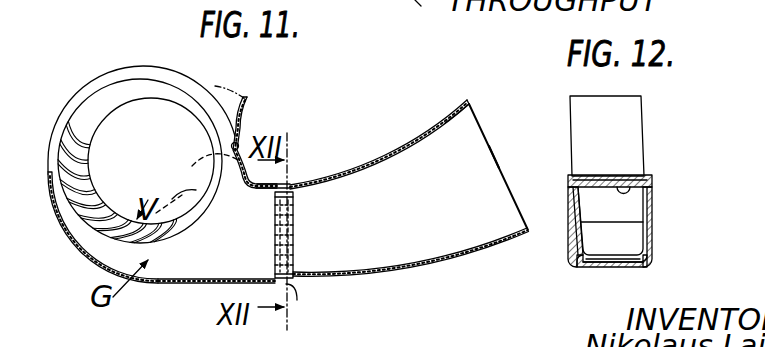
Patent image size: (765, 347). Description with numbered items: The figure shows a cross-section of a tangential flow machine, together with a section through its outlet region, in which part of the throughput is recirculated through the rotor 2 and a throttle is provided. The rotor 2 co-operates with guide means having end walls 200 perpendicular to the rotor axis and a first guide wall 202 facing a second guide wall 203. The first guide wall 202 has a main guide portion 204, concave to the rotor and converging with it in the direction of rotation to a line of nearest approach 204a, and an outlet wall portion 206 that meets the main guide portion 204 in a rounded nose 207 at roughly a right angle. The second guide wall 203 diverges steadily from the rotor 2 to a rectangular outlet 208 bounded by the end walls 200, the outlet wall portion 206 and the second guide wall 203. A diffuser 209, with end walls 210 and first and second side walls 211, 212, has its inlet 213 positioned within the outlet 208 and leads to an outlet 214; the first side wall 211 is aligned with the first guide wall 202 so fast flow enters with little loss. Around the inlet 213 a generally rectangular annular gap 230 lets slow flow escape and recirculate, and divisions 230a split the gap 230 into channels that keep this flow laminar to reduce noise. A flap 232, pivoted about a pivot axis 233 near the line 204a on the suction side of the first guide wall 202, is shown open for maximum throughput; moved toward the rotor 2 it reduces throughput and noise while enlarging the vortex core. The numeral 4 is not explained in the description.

In FIG. 11, the rotor 2 is at (126, 158).
In FIG. 11, the motor 4 is at (104, 147).
In FIG. 11, the end walls 200 is at (76, 104).
In FIG. 11, the first guide wall 202 is at (219, 206).
In FIG. 11, the second guide wall 203 is at (101, 268).
In FIG. 12, the second guide wall 203 is at (573, 266).
In FIG. 11, the main guide portion 204 is at (183, 178).
In FIG. 11, the line of nearest approach 204a is at (228, 152).
In FIG. 11, the outlet wall portion 206 is at (277, 186).
In FIG. 12, the outlet wall portion 206 is at (584, 174).
In FIG. 11, the rounded nose 207 is at (238, 186).
In FIG. 11, the outlet 208 is at (297, 300).
In FIG. 11, the diffuser 209 is at (369, 192).
In FIG. 12, the diffuser 209 is at (637, 130).
In FIG. 11, the end walls 210 is at (469, 136).
In FIG. 12, the end walls 210 is at (648, 207).
In FIG. 11, the first side wall 211 is at (432, 127).
In FIG. 12, the first side wall 211 is at (631, 184).
In FIG. 11, the second side wall 212 is at (452, 258).
In FIG. 12, the second side wall 212 is at (598, 269).
In FIG. 11, the inlet 213 is at (232, 280).
In FIG. 11, the outlet 214 is at (497, 157).
In FIG. 11, the gap 230 is at (293, 276).
In FIG. 12, the gap 230 is at (658, 264).
In FIG. 11, the divisions 230a is at (293, 244).
In FIG. 12, the divisions 230a is at (633, 269).
In FIG. 11, the flap 232 is at (246, 98).
In FIG. 11, the pivot axis 233 is at (250, 128).